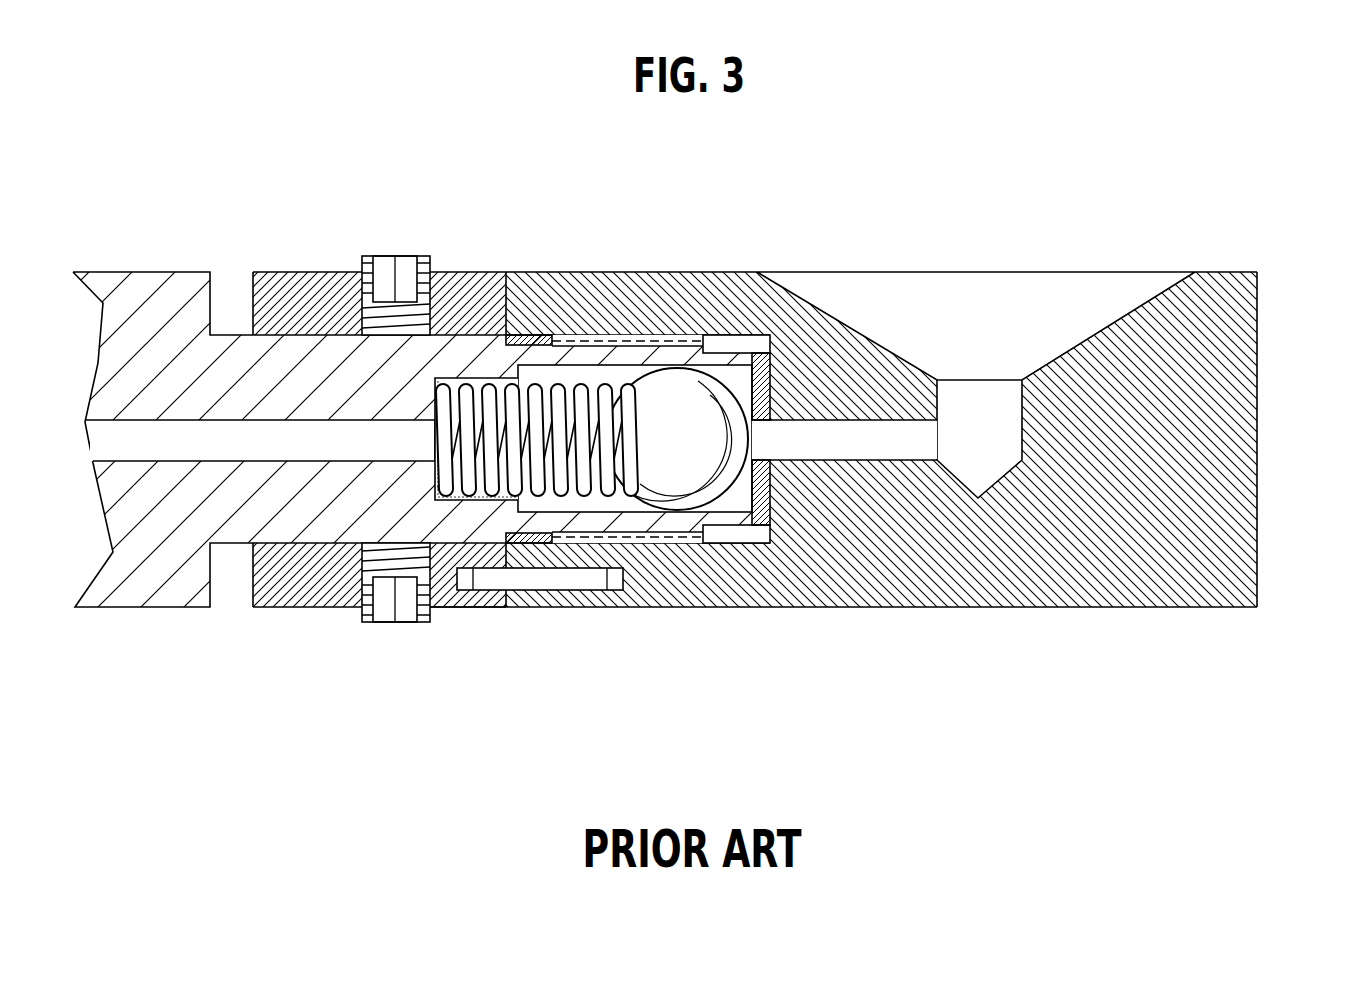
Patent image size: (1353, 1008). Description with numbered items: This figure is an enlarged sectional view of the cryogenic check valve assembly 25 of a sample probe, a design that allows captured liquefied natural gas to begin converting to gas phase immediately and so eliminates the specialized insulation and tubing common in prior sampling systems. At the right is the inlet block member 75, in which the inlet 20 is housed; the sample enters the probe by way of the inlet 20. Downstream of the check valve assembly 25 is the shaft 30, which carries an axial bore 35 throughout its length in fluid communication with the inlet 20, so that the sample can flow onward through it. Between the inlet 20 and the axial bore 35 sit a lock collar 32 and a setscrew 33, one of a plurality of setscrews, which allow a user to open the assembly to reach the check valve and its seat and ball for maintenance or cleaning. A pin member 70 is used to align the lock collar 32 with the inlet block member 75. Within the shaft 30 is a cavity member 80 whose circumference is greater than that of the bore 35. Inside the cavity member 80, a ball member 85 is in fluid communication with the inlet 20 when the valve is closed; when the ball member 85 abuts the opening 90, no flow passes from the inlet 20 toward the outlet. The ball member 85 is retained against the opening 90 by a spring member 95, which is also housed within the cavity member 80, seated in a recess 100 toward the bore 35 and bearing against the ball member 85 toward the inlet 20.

The inlet 20 is at (1165, 270).
The check valve assembly 25 is at (938, 610).
The shaft 30 is at (169, 270).
The lock collar 32 is at (457, 270).
The setscrew 33 is at (395, 632).
The axial bore 35 is at (227, 445).
The pin member 70 is at (540, 588).
The inlet block member 75 is at (1259, 566).
The cavity member 80 is at (630, 368).
The ball member 85 is at (684, 465).
The opening 90 is at (763, 442).
The spring member 95 is at (574, 380).
The recess 100 is at (503, 380).